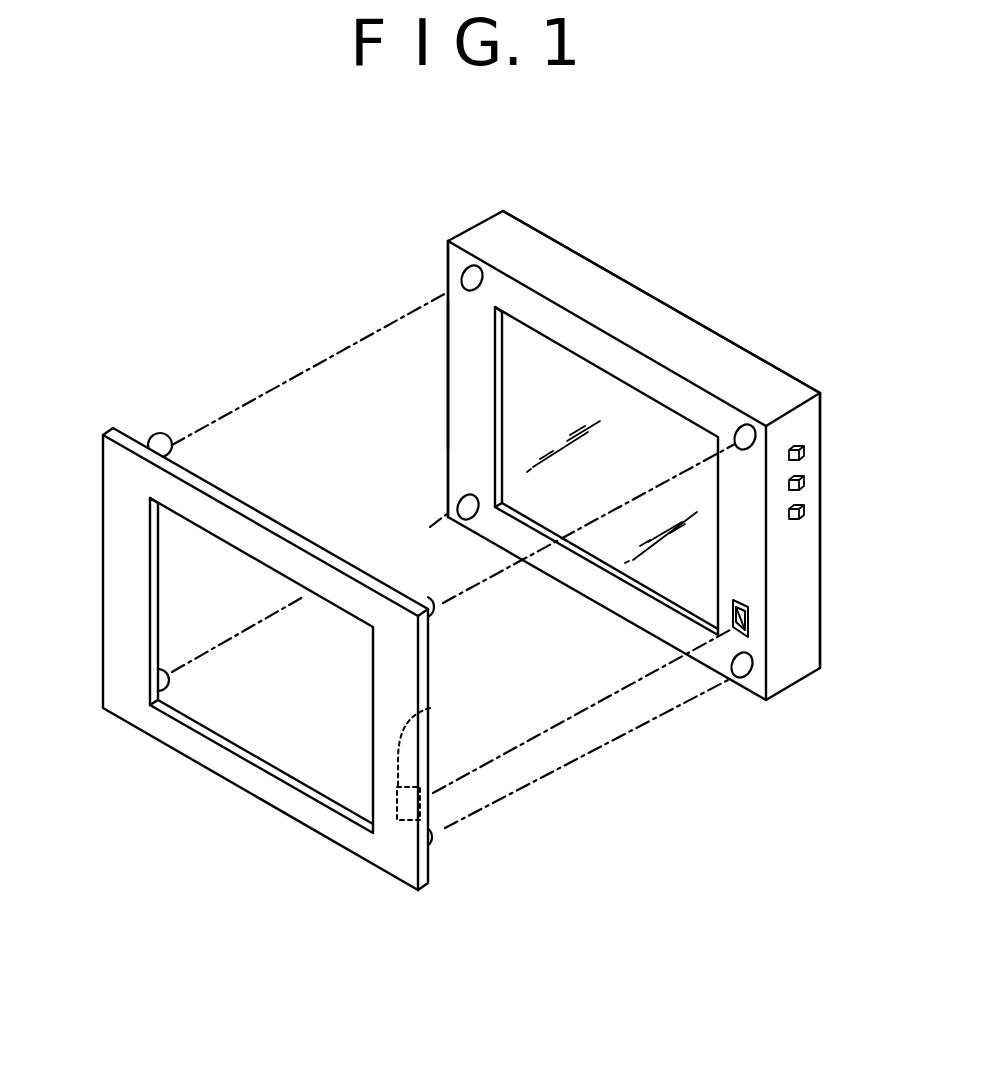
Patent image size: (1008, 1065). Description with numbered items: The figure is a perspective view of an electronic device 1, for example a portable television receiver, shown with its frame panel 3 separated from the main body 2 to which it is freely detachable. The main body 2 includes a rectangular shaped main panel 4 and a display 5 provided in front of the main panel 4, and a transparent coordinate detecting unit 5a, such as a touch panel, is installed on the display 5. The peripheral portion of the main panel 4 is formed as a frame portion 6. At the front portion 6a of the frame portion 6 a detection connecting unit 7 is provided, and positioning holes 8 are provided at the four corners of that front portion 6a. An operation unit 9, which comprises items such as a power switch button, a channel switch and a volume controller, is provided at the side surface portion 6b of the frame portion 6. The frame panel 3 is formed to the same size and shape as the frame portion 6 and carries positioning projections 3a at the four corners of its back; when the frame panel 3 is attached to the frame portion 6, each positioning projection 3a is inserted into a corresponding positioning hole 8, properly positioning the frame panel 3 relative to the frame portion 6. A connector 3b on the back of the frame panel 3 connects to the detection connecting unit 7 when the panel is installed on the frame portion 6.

The electronic device 1 is at (222, 255).
The main body 2 is at (626, 297).
The frame panel 3 is at (185, 738).
The positioning projections 3a is at (152, 440).
The connector 3b is at (433, 712).
The main panel 4 is at (668, 323).
The display 5 is at (533, 425).
The transparent coordinate detecting unit 5a is at (523, 468).
The frame portion 6 is at (472, 358).
The front portion 6a is at (472, 390).
The side surface portion 6b is at (795, 663).
The detection connecting unit 7 is at (750, 612).
The positioning holes 8 is at (474, 265).
The operation unit 9 is at (804, 455).